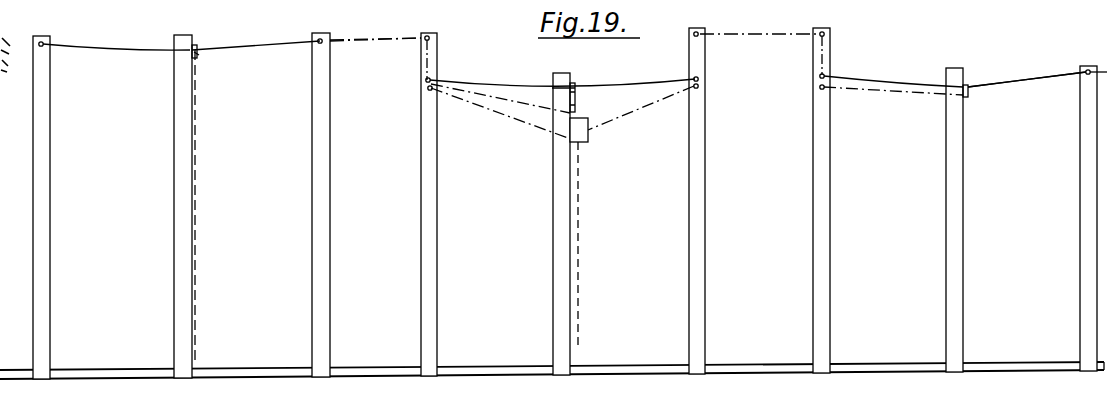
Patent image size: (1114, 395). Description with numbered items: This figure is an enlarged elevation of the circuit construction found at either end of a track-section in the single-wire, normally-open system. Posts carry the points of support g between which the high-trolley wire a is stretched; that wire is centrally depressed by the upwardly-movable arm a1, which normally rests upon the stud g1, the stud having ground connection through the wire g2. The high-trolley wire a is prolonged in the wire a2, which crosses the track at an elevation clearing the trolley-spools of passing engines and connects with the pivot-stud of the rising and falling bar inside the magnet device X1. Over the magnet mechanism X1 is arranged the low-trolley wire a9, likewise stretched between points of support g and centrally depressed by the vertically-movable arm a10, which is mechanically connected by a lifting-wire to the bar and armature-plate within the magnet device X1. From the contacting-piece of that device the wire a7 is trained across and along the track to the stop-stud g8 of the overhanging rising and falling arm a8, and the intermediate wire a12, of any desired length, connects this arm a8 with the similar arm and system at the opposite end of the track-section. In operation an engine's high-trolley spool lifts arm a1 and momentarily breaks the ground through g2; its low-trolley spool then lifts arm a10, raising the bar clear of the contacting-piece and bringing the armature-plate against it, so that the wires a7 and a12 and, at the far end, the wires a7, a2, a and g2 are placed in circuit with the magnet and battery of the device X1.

The points of support g is at (42, 45).
The high-trolley wire a is at (235, 50).
The upwardly-movable arm a1 is at (196, 48).
The stud g1 is at (198, 55).
The ground wire g2 is at (200, 124).
The prolonged wire a2 is at (375, 23).
The low-trolley wire a9 is at (640, 86).
The vertically-movable arm a10 is at (518, 81).
The wire a7 is at (562, 112).
The magnet device X1 is at (585, 142).
The overhanging rising and falling arm a8 is at (968, 87).
The stop-stud g8 is at (969, 96).
The intermediate wire a12 is at (1027, 66).